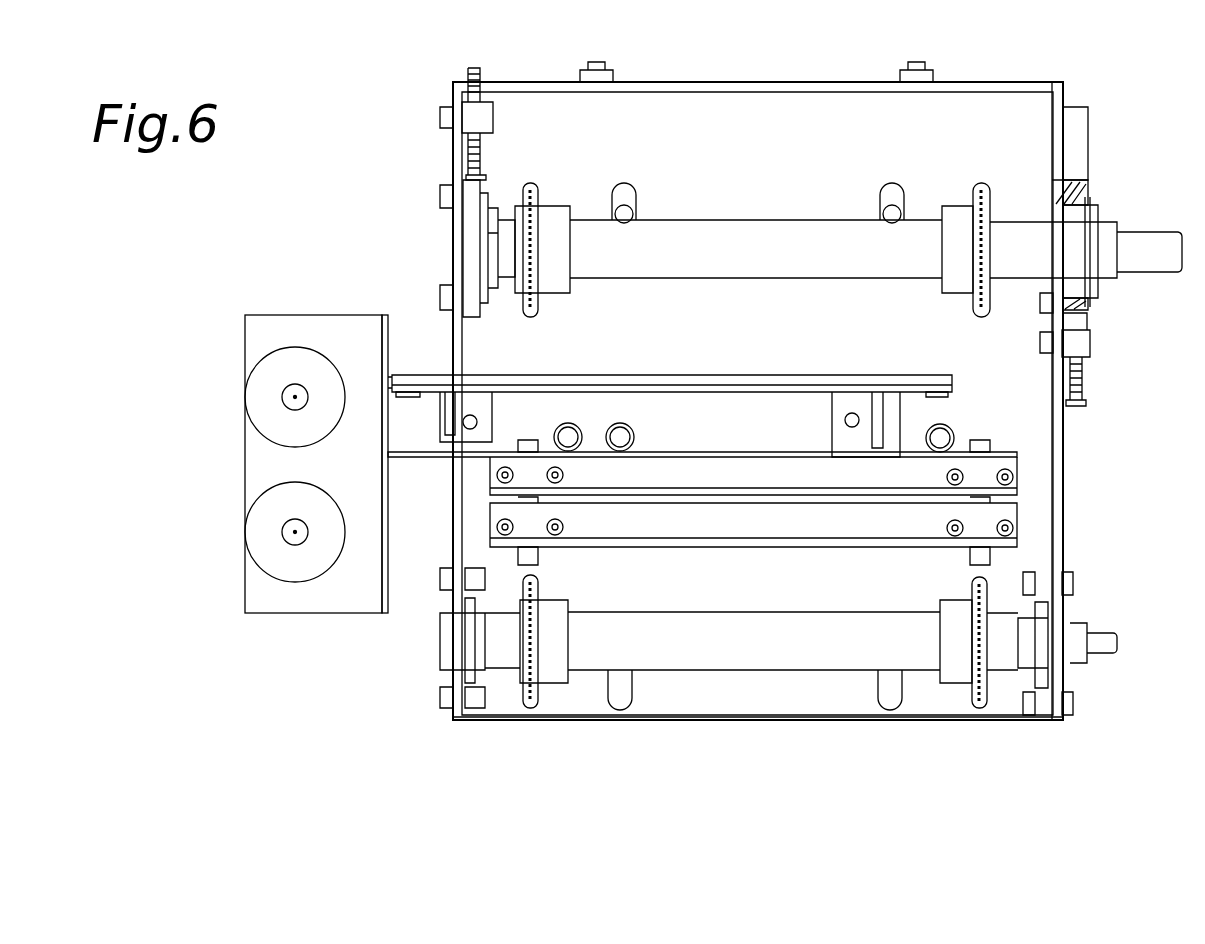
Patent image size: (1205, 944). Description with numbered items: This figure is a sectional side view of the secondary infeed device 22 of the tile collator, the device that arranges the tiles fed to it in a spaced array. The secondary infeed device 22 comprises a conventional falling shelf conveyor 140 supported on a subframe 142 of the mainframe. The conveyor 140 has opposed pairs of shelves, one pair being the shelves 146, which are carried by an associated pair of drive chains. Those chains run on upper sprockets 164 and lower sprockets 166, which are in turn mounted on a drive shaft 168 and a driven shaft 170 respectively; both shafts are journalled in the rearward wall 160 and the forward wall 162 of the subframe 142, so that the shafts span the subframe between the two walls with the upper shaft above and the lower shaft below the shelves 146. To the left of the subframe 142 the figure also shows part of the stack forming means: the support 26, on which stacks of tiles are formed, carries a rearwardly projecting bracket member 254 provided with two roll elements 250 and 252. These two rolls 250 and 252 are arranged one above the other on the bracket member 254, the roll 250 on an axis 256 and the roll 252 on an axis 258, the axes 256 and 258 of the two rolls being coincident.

The secondary infeed device 22 is at (1118, 148).
The support 26 is at (760, 378).
The falling shelf conveyor 140 is at (953, 752).
The subframe 142 is at (1076, 517).
The shelves 146 is at (703, 517).
The rearward wall 160 is at (457, 147).
The forward wall 162 is at (1063, 442).
The upper sprockets 164 is at (533, 185).
The lower sprockets 166 is at (532, 710).
The drive shaft 168 is at (778, 228).
The driven shaft 170 is at (748, 625).
The roll element 250 is at (263, 412).
The roll element 252 is at (260, 545).
The bracket member 254 is at (330, 607).
The axis 256 is at (295, 397).
The axis 258 is at (295, 532).